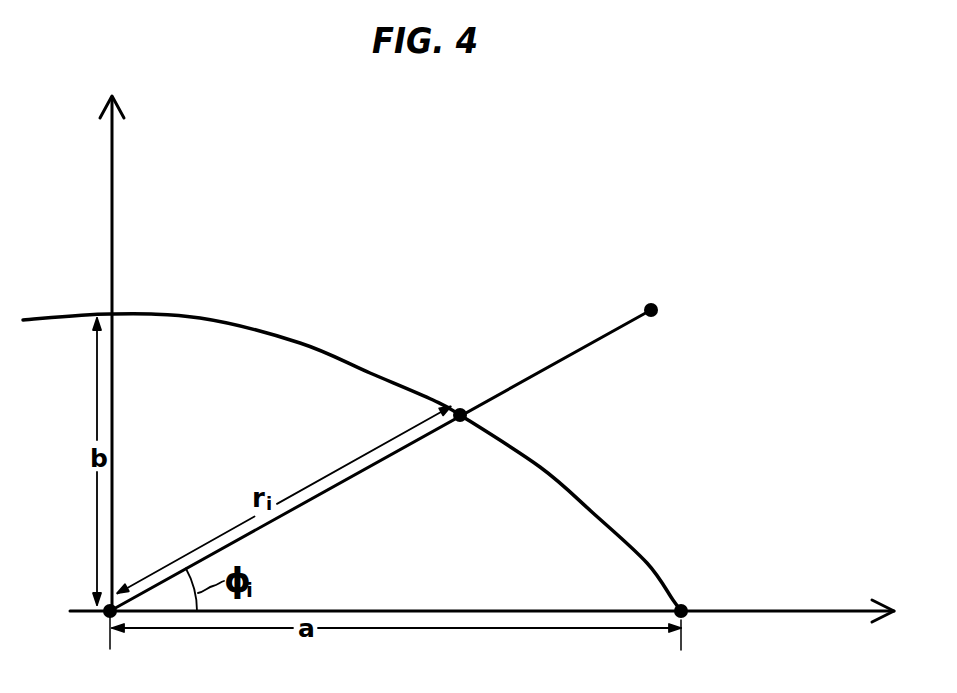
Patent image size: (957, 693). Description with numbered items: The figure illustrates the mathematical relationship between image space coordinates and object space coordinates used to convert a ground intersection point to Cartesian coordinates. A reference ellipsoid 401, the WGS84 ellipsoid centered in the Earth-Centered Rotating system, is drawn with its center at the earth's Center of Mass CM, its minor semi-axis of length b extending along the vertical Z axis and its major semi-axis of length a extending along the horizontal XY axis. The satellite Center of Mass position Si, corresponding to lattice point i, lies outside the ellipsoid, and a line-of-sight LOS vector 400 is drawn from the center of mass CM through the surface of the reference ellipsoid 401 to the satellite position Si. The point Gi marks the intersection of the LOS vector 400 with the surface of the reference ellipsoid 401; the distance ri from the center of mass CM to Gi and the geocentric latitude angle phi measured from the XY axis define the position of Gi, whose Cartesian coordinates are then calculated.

The LOS vector 400 is at (552, 365).
The reference ellipsoid 401 is at (379, 375).
The satellite Center of Mass position Si is at (642, 290).
The intersection of LOS vector with reference ellipsoid Gi is at (458, 392).
The earth's Center of Mass CM is at (107, 616).
The Z axis Z is at (123, 353).
The XY axis XY is at (492, 629).